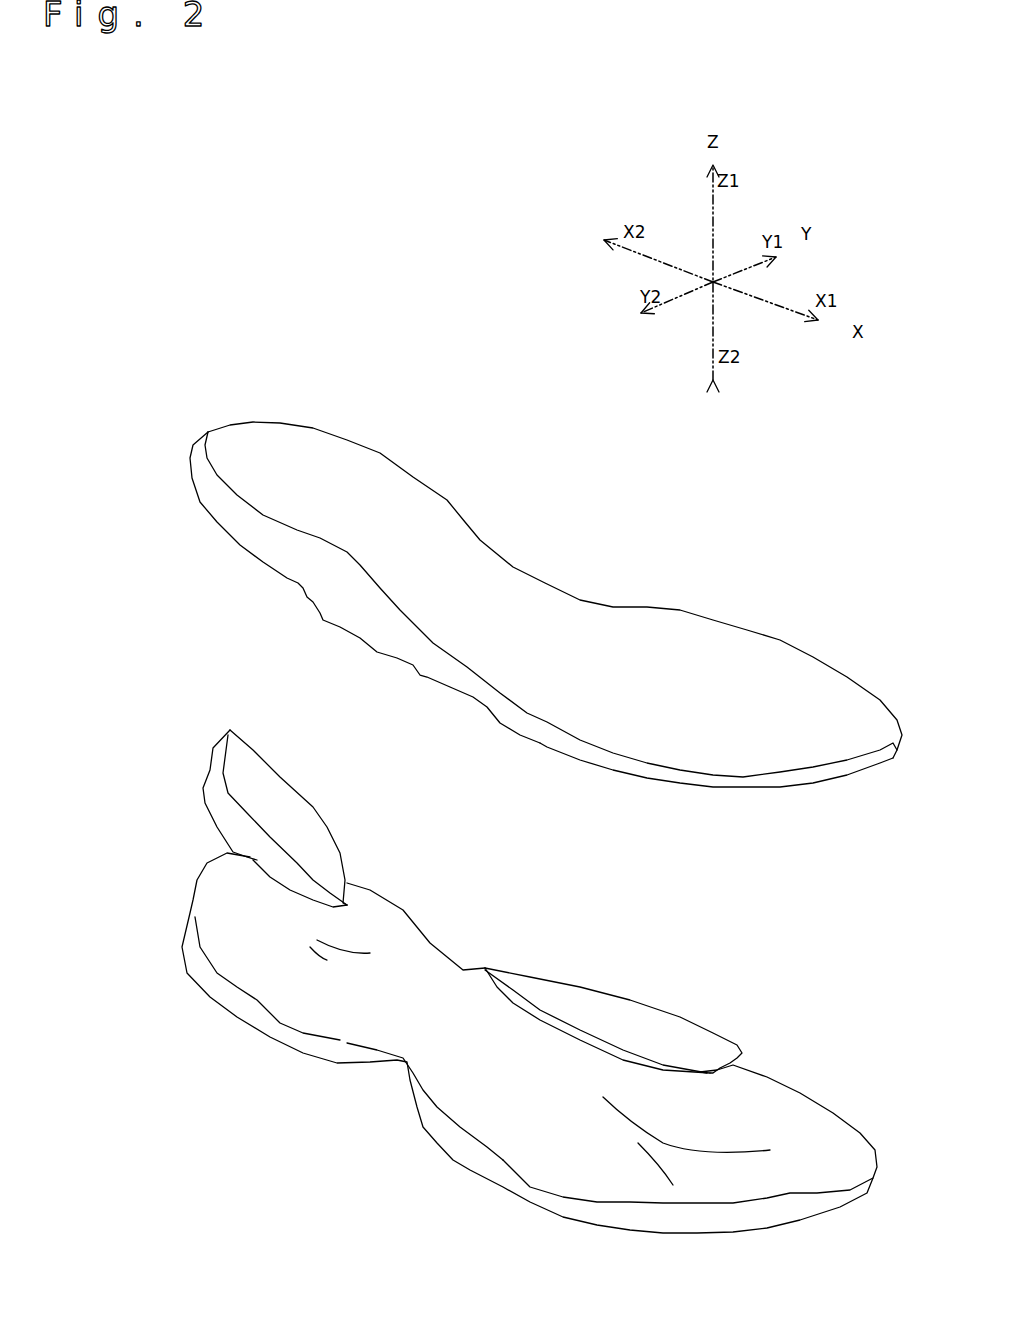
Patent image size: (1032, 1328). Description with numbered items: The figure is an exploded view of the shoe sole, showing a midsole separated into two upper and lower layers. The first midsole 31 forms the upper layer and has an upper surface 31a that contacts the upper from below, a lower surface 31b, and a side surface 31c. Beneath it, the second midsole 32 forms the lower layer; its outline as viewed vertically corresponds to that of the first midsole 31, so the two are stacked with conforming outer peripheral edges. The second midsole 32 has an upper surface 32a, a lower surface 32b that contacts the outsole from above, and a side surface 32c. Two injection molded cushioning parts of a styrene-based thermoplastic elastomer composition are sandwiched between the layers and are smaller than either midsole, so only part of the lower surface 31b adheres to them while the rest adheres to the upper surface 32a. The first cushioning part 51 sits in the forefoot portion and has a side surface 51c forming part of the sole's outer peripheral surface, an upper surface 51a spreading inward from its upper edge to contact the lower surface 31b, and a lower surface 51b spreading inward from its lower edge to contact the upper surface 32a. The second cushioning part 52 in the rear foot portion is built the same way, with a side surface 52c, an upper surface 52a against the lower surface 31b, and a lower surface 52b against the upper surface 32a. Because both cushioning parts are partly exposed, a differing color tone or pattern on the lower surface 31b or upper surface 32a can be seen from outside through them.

The first midsole 31 is at (546, 628).
The upper surface of first midsole 31a is at (520, 592).
The lower surface of first midsole 31b is at (525, 747).
The side surface of first midsole 31c is at (413, 652).
The second midsole 32 is at (529, 1055).
The upper surface of second midsole 32a is at (443, 993).
The lower surface of second midsole 32b is at (452, 1167).
The side surface of second midsole 32c is at (427, 1125).
The first cushioning part 51 is at (617, 1028).
The upper surface of first cushioning part 51a is at (685, 1032).
The lower surface of first cushioning part 51b is at (618, 1068).
The side surface of first cushioning part 51c is at (543, 1027).
The second cushioning part 52 is at (298, 811).
The upper surface of second cushioning part 52a is at (320, 848).
The lower surface of second cushioning part 52b is at (295, 903).
The side surface of second cushioning part 52c is at (268, 857).